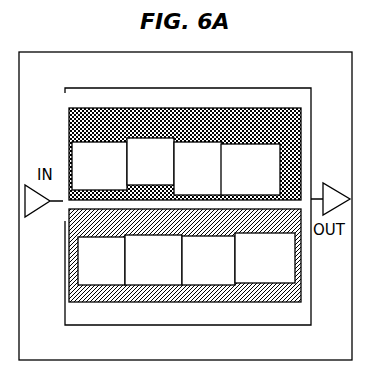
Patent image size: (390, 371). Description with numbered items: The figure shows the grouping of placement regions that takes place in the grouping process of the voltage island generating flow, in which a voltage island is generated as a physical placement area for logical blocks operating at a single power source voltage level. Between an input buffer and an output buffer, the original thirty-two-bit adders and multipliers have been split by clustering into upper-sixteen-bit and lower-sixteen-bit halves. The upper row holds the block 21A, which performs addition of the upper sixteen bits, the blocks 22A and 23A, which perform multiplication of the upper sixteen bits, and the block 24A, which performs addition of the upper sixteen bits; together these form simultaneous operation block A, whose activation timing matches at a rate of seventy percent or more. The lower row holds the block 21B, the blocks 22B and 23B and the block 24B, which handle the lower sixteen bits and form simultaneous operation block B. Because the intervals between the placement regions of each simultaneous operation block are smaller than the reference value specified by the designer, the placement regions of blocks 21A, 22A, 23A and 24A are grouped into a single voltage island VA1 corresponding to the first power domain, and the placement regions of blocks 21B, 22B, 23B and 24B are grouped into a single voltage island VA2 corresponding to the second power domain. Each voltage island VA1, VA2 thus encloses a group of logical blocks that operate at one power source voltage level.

The voltage island VA1 is at (75, 108).
The voltage island VA2 is at (77, 303).
The block 21A is at (97, 141).
The block 22A is at (151, 137).
The block 23A is at (201, 141).
The block 24A is at (248, 143).
The block 21B is at (102, 286).
The block 22B is at (155, 286).
The block 23B is at (209, 294).
The block 24B is at (262, 284).